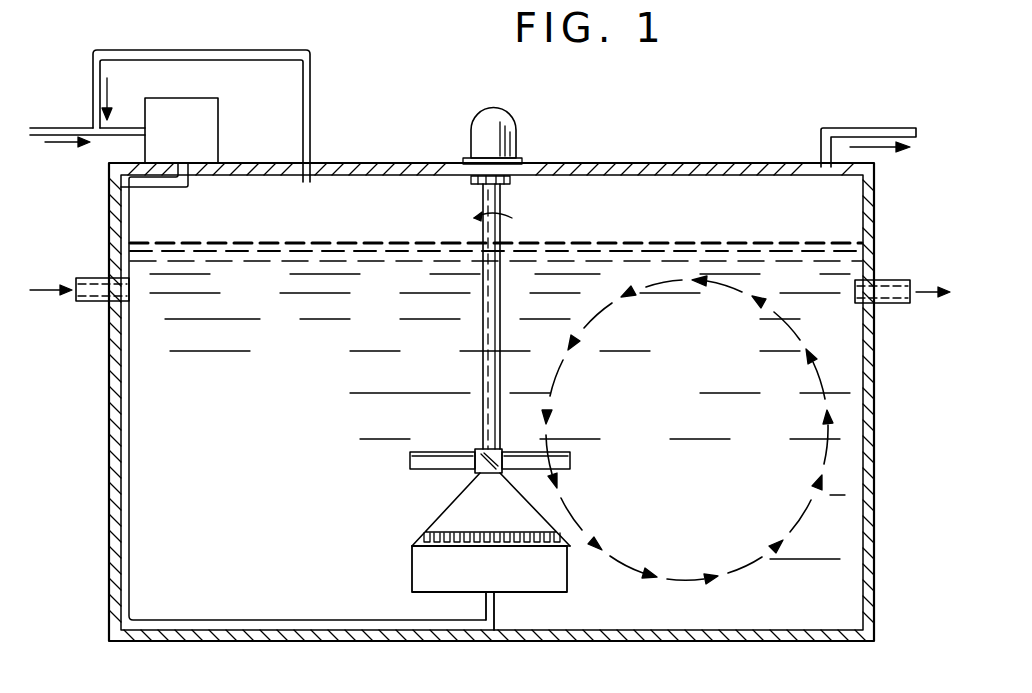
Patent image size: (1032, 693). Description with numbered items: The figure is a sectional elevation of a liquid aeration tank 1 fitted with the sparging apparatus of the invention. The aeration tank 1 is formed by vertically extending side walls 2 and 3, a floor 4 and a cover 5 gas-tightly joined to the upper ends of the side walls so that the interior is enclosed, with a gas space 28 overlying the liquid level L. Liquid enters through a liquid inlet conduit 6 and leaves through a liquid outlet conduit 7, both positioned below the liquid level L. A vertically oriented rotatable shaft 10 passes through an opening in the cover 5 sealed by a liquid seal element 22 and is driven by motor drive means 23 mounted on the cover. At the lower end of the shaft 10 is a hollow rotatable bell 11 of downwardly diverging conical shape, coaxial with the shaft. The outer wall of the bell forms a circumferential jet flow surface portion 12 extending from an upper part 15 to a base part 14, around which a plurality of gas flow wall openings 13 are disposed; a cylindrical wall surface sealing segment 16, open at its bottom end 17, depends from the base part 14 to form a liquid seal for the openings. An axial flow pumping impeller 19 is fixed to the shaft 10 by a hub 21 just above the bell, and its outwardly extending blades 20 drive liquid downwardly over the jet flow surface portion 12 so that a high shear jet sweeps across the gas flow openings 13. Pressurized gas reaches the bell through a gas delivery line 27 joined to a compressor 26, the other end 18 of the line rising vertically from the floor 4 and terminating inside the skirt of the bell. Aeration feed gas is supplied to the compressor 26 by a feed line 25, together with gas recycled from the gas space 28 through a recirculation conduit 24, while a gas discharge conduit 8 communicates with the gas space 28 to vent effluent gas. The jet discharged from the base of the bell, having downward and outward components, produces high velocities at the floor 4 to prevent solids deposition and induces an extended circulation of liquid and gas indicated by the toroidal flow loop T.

The aeration tank 1 is at (874, 604).
The side wall 2 is at (115, 405).
The side wall 3 is at (870, 488).
The floor 4 is at (572, 641).
The cover 5 is at (673, 163).
The liquid inlet conduit 6 is at (92, 302).
The liquid outlet conduit 7 is at (890, 305).
The gas discharge conduit 8 is at (862, 128).
The rotatable shaft 10 is at (483, 329).
The rotatable bell 11 is at (440, 510).
The jet flow surface portion 12 is at (560, 520).
The gas flow wall openings 13 is at (412, 547).
The base part 14 is at (425, 535).
The upper part 15 is at (510, 474).
The wall surface sealing segment 16 is at (567, 572).
The bottom end 17 is at (512, 592).
The other end of gas delivery line 18 is at (485, 605).
The axial flow pumping impeller 19 is at (455, 452).
The blades 20 is at (430, 470).
The hub 21 is at (515, 438).
The liquid seal element 22 is at (470, 180).
The motor drive means 23 is at (500, 110).
The recirculation conduit 24 is at (194, 50).
The feed line 25 is at (77, 128).
The compressor 26 is at (200, 98).
The gas delivery line 27 is at (160, 625).
The gas space 28 is at (850, 215).
The liquid level L is at (748, 243).
The toroidal flow loop T is at (800, 322).